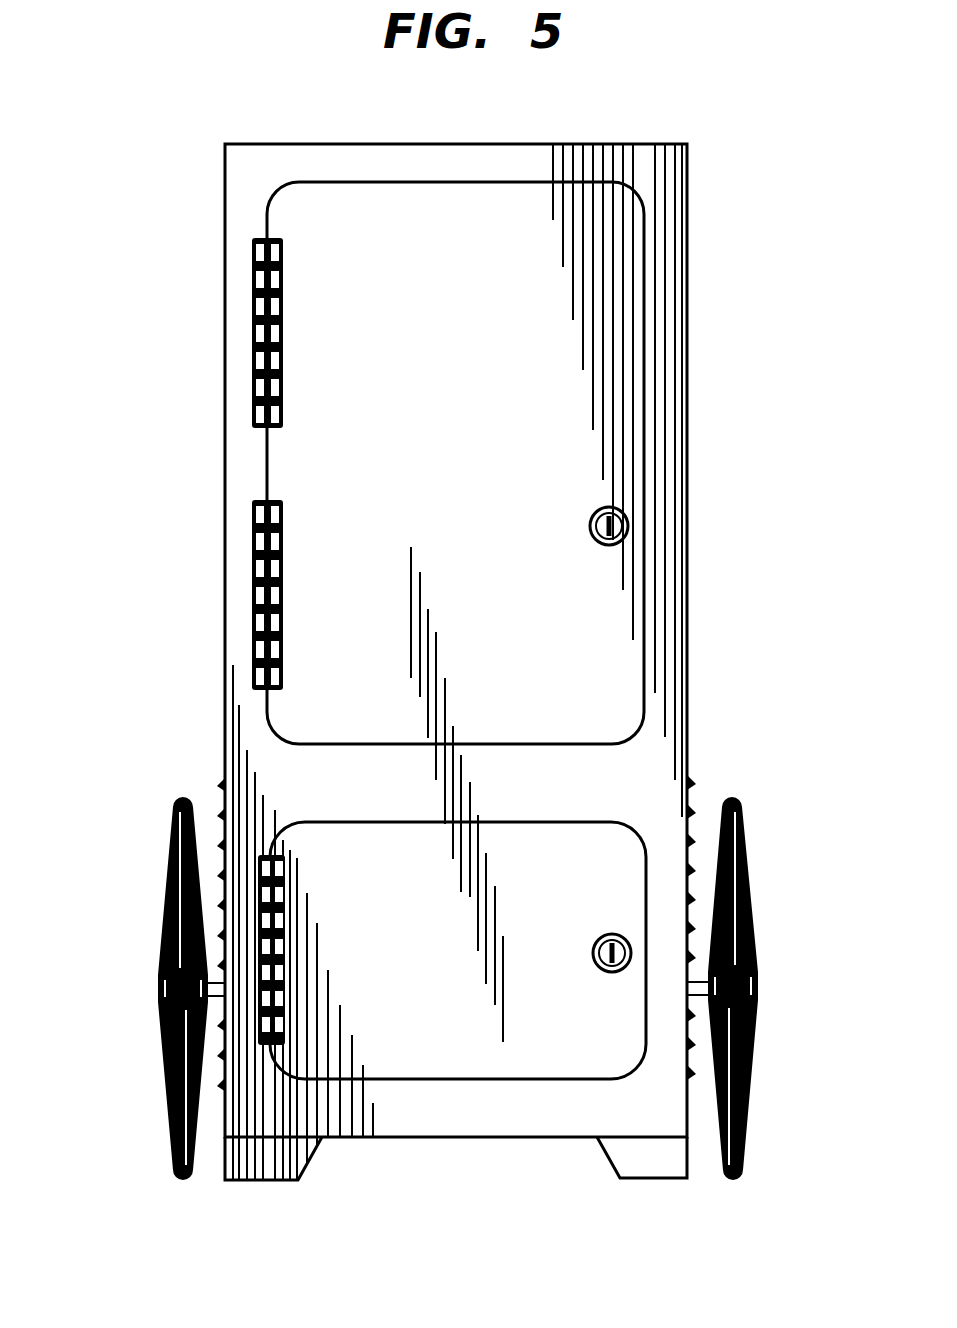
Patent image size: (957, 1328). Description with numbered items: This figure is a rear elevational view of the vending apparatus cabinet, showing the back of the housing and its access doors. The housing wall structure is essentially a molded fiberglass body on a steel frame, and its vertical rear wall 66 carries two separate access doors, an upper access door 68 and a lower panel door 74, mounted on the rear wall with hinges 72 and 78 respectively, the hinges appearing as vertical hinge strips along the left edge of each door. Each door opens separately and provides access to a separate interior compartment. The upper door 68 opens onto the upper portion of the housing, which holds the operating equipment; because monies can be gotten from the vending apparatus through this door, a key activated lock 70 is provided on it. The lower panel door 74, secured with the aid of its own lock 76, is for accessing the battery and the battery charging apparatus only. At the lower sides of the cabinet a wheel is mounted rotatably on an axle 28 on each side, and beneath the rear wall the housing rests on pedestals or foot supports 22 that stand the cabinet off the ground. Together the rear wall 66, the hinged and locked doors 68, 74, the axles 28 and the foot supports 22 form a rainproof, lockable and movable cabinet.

The foot supports 22 is at (268, 1170).
The axle 28 is at (183, 855).
The vertical rear wall 66 is at (668, 203).
The access door 68 is at (612, 343).
The key activated lock 70 is at (628, 521).
The hinges 72 is at (253, 288).
The lower panel door 74 is at (597, 842).
The lock 76 is at (595, 968).
The hinges 78 is at (288, 912).